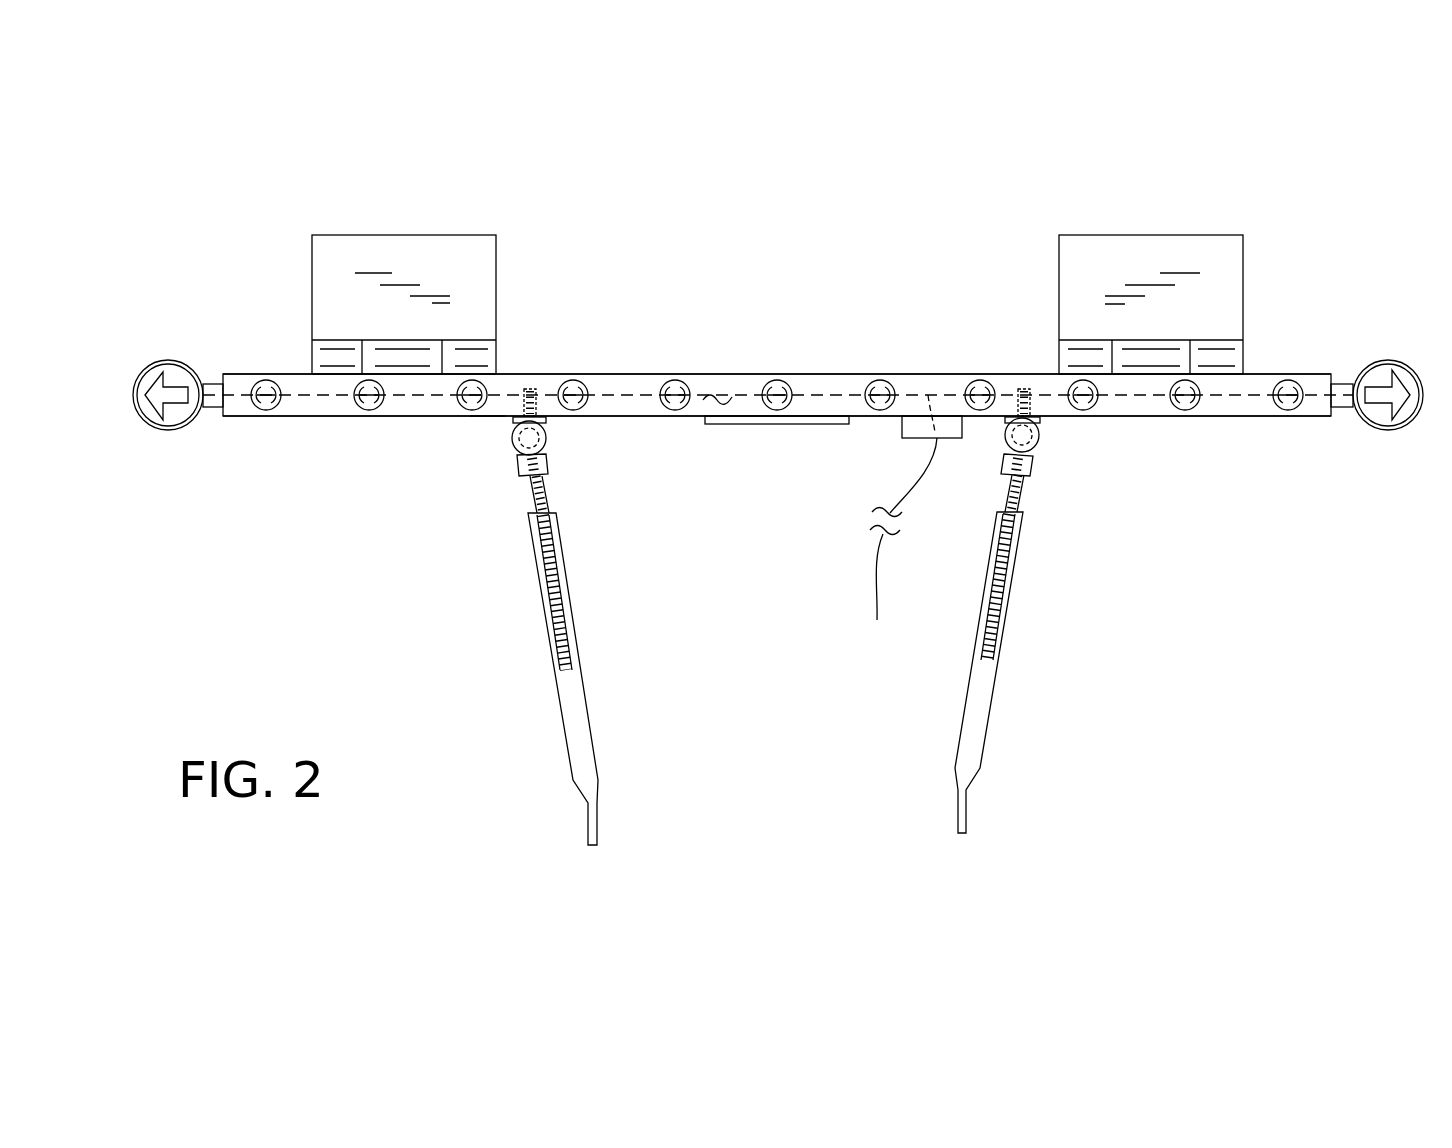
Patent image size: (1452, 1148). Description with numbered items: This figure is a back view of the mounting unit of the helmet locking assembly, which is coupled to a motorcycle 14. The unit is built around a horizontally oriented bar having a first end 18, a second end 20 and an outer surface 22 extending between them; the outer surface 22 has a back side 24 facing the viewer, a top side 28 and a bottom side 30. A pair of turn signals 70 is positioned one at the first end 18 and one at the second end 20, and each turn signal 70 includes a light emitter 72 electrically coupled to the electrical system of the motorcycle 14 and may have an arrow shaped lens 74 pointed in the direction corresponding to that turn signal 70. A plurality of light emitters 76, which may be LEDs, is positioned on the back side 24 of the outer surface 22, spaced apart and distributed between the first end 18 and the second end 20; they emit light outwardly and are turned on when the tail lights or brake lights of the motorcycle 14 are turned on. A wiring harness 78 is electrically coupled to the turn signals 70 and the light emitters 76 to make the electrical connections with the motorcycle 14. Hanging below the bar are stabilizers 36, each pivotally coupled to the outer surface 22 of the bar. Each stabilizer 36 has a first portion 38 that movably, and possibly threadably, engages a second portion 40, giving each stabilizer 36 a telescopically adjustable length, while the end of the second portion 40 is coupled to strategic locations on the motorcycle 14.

The motorcycle 14 is at (890, 375).
The first end 18 is at (222, 380).
The second end 20 is at (1333, 377).
The outer surface 22 is at (723, 393).
The back side 24 is at (642, 402).
The top side 28 is at (603, 375).
The bottom side 30 is at (487, 420).
The stabilizers 36 is at (588, 715).
The first portion 38 is at (478, 508).
The second portion 40 is at (522, 742).
The turn signals 70 is at (155, 363).
The light emitter 72 is at (163, 397).
The arrow shaped lens 74 is at (150, 410).
The light emitters 76 is at (472, 374).
The wiring harness 78 is at (937, 438).